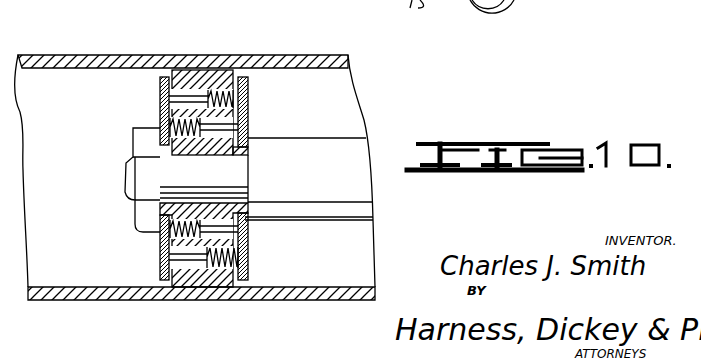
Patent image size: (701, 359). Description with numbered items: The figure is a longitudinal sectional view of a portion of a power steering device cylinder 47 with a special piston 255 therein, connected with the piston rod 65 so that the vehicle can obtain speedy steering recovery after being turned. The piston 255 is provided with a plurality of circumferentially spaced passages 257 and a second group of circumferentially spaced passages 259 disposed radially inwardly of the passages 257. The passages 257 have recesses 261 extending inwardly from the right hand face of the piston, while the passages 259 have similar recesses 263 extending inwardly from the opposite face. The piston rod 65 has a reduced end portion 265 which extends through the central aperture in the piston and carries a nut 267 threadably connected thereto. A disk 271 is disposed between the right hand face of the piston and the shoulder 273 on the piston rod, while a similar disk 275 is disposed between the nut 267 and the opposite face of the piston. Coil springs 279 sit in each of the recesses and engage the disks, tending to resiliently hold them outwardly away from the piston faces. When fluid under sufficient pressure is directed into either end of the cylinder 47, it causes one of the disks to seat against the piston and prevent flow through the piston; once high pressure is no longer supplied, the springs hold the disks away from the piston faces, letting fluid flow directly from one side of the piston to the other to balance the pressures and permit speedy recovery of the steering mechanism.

The cylinder 47 is at (265, 63).
The piston rod 65 is at (348, 148).
The piston 255 is at (196, 70).
The passages 257 is at (193, 258).
The passages 259 is at (249, 213).
The recesses 261 is at (221, 270).
The recesses 263 is at (167, 121).
The reduced end portion 265 is at (125, 194).
The nut 267 is at (148, 226).
The disk 271 is at (247, 118).
The shoulder 273 is at (246, 152).
The disk 275 is at (160, 84).
The coil springs 279 is at (160, 246).